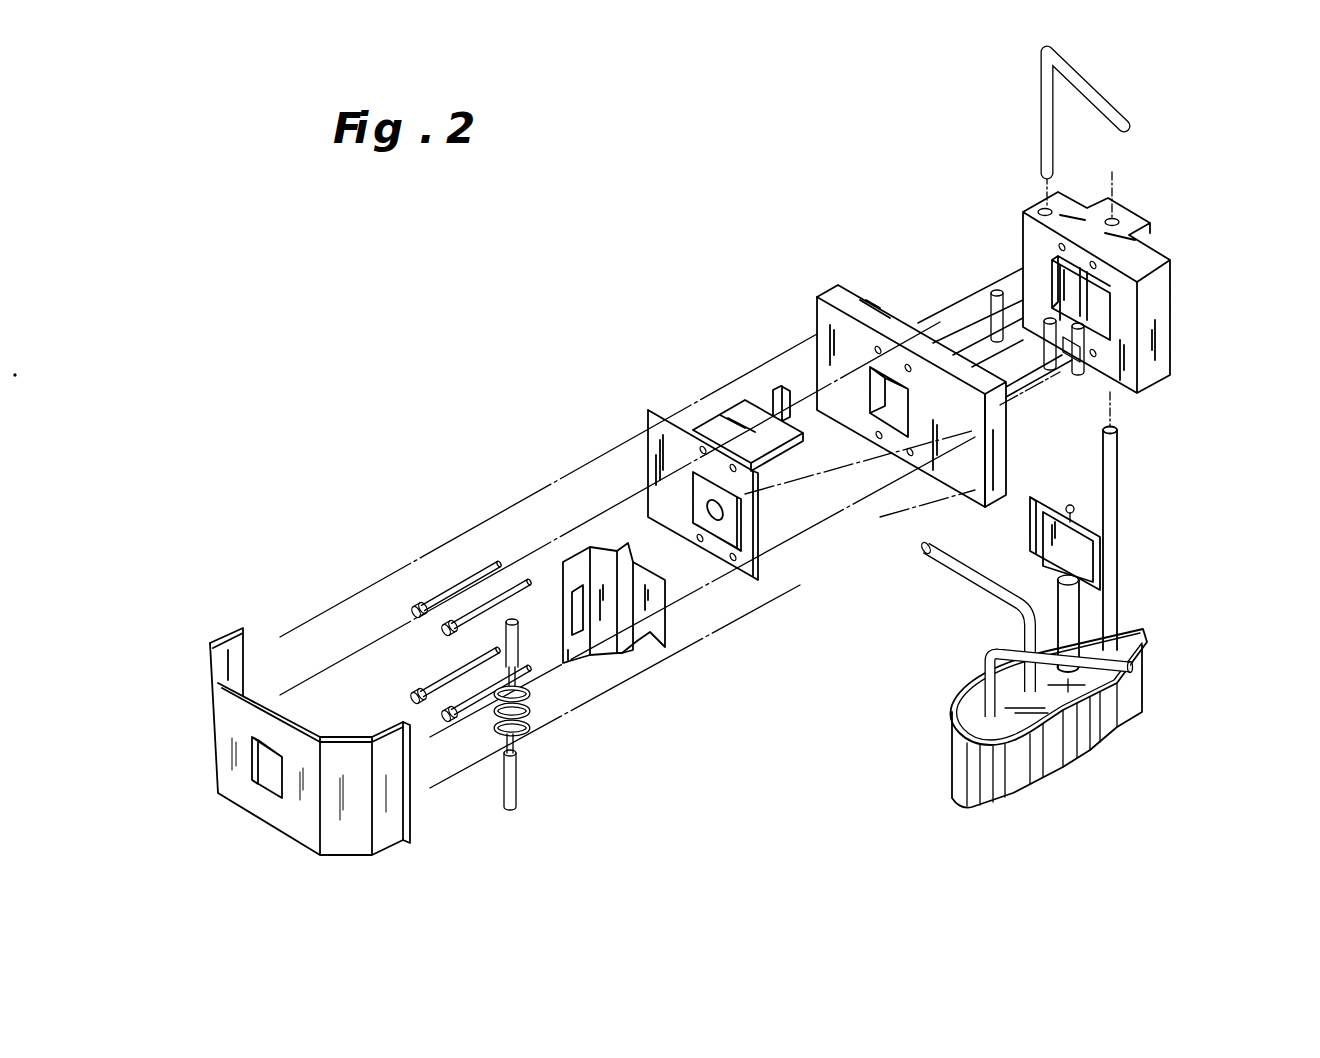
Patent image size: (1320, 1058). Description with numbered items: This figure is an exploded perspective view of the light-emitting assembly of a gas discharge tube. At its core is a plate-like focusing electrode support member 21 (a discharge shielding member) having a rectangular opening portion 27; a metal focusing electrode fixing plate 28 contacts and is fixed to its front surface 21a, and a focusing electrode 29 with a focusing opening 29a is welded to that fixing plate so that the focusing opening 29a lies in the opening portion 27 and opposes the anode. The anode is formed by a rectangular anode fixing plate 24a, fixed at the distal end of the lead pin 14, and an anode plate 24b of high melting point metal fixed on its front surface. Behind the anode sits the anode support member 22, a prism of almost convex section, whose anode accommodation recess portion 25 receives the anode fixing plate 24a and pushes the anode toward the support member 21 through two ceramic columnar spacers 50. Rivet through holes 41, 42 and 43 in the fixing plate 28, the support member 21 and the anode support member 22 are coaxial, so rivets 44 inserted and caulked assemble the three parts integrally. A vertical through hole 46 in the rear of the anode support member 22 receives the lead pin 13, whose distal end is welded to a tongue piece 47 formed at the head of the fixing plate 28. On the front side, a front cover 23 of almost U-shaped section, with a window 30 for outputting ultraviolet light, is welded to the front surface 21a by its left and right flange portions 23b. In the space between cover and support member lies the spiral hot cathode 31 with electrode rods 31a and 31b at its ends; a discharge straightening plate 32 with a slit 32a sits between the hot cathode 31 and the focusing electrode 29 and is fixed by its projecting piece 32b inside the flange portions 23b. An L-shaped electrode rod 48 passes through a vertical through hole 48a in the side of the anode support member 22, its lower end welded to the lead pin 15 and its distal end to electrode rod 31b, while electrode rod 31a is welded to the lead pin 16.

The lead pin 13 is at (1117, 478).
The lead pin 14 is at (1070, 505).
The lead pin 15 is at (975, 597).
The lead pin 16 is at (1148, 658).
The focusing electrode support member 21 is at (845, 384).
The front surface 21a is at (820, 350).
The anode support member 22 is at (1095, 269).
The front cover 23 is at (303, 830).
The flange portions 23b is at (240, 630).
The anode fixing plate 24a is at (1098, 550).
The anode plate 24b is at (1095, 578).
The anode accommodation recess portion 25 is at (1110, 315).
The opening portion 27 is at (877, 412).
The focusing electrode fixing plate 28 is at (660, 427).
The focusing electrode 29 is at (693, 478).
The focusing opening 29a is at (717, 515).
The window 30 is at (270, 770).
The hot cathode 31 is at (566, 732).
The electrode rod 31a is at (515, 790).
The electrode rod 31b is at (520, 650).
The discharge straightening plate 32 is at (605, 645).
The slit 32a is at (575, 595).
The projecting piece 32b is at (660, 640).
The rivet through holes 41 is at (703, 450).
The rivet through holes 42 is at (908, 368).
The rivet through holes 43 is at (1092, 265).
The rivets 44 is at (492, 604).
The vertical through hole 46 is at (1115, 222).
The tongue piece 47 is at (737, 410).
The electrode rod 48 is at (1045, 95).
The vertical through hole 48a is at (1042, 206).
The columnar spacers 50 is at (995, 300).